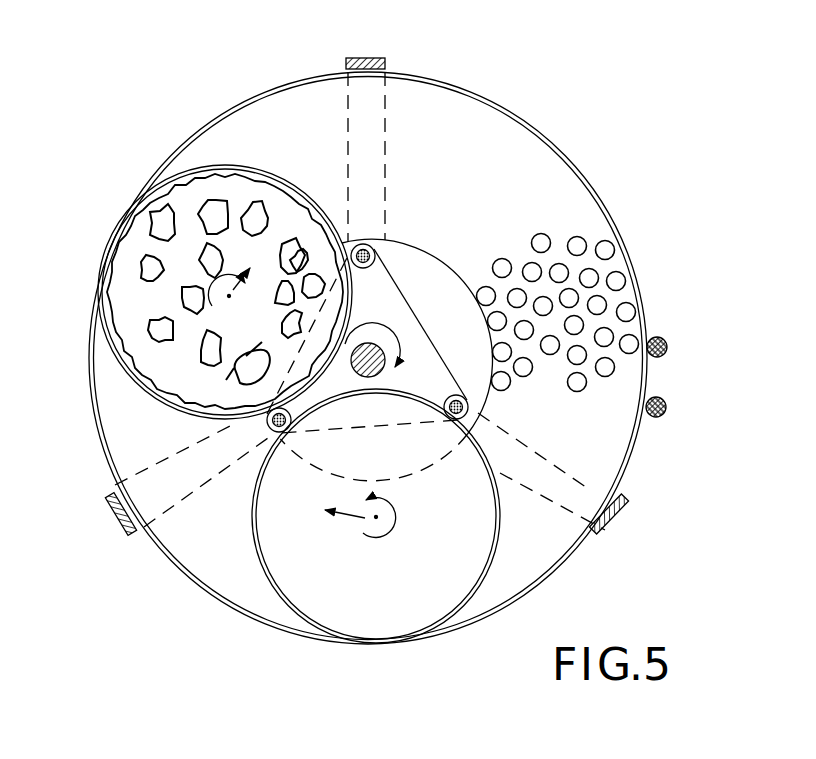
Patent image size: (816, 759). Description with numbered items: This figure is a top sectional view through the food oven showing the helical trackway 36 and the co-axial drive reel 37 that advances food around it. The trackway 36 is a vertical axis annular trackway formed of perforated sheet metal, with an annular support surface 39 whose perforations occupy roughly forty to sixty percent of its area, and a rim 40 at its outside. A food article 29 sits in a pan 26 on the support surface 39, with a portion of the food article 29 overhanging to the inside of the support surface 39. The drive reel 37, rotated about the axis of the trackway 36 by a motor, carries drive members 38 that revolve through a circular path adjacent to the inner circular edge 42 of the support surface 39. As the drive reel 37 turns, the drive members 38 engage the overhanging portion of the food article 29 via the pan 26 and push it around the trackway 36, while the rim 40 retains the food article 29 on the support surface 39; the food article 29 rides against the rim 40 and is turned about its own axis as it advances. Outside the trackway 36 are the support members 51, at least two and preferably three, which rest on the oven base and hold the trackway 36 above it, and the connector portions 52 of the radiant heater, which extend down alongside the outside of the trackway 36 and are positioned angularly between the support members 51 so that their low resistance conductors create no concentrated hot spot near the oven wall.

The pan 26 is at (207, 170).
The food article 29 is at (236, 183).
The trackway 36 is at (492, 124).
The drive reel 37 is at (398, 272).
The drive members 38 is at (397, 242).
The support surface 39 is at (430, 121).
The rim 40 is at (505, 127).
The inner circular edge 42 is at (452, 290).
The support members 51 is at (375, 58).
The connector portions 52 is at (660, 404).